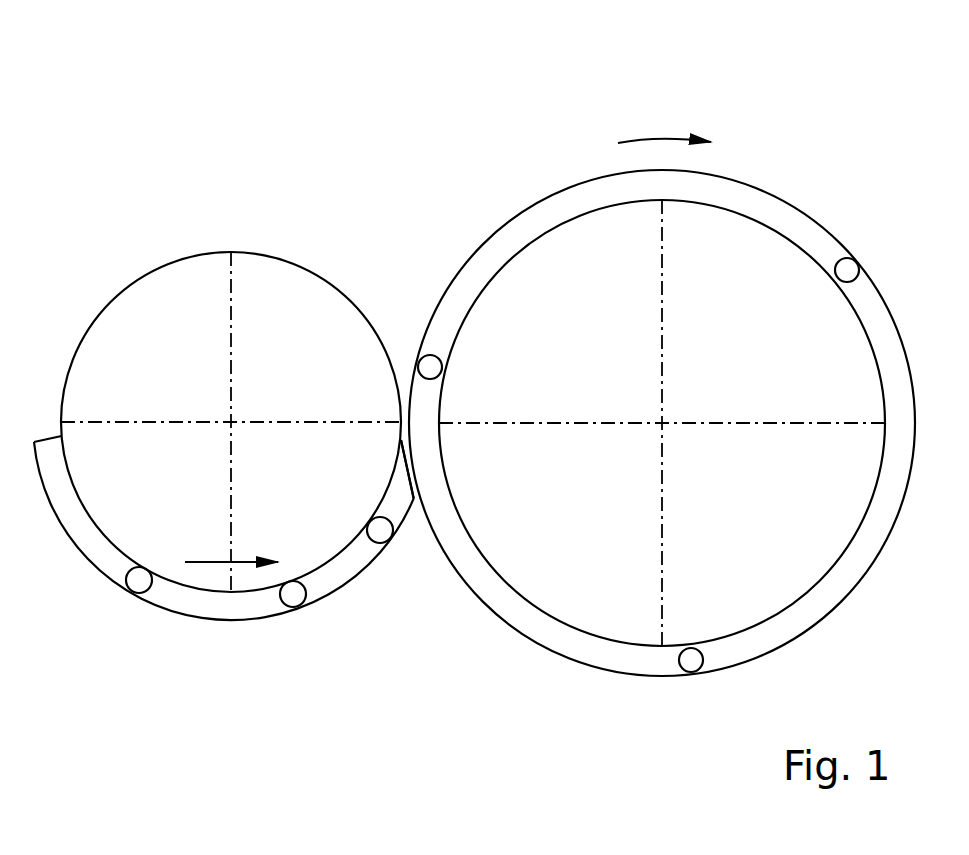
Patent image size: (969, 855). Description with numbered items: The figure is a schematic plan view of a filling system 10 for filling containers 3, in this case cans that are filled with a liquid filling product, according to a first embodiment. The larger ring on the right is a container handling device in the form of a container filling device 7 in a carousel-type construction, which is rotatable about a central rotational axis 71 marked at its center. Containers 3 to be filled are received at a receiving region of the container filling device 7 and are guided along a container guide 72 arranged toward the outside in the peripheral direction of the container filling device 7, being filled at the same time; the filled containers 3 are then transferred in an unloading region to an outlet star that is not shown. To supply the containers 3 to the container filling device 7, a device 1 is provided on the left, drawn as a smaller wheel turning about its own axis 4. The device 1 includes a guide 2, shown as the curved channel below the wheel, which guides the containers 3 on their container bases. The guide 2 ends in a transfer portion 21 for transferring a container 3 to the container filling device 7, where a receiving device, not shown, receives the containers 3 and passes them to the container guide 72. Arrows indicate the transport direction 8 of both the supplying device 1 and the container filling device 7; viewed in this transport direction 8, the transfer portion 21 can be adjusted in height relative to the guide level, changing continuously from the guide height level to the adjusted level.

The filling system 10 is at (232, 93).
The device for supplying containers 1 is at (116, 196).
The guide 2 is at (211, 608).
The transfer portion 21 is at (409, 533).
The containers 3 is at (137, 592).
The axis of feeding wheel 4 is at (234, 420).
The container filling device 7 is at (797, 157).
The central rotational axis 71 is at (665, 421).
The container guide 72 is at (560, 640).
The transport direction 8 is at (667, 140).